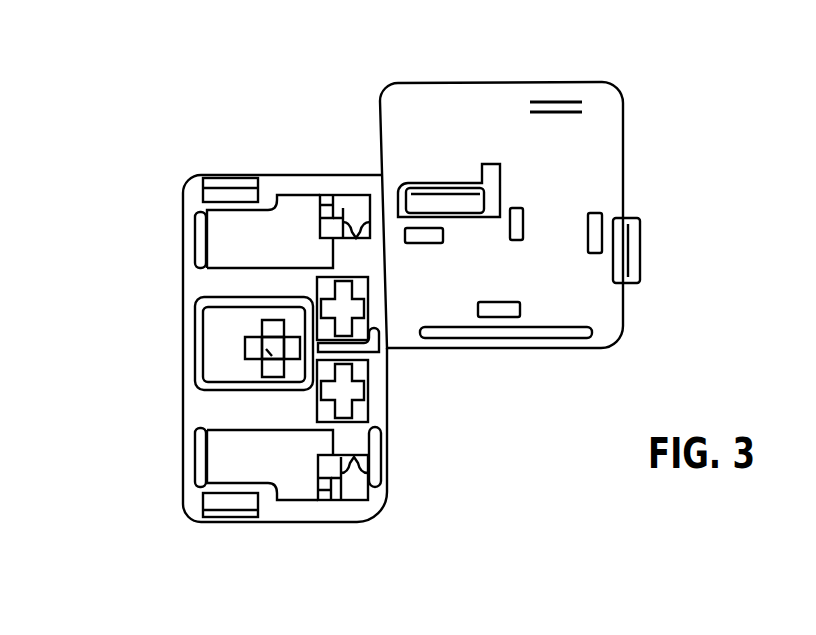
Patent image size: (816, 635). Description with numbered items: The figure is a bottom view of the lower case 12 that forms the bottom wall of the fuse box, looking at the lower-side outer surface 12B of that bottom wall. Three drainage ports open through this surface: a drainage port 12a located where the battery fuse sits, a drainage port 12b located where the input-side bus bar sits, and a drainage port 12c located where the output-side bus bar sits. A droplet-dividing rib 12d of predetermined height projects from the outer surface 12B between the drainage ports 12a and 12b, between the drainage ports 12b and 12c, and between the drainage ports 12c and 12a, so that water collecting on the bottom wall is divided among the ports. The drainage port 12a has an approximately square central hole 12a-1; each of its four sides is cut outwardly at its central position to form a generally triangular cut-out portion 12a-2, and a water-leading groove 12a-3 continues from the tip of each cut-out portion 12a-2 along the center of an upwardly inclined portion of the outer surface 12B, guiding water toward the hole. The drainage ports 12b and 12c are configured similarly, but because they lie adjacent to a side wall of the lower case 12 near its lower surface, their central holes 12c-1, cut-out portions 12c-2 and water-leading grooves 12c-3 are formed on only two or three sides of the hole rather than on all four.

The lower case 12 is at (218, 167).
The outer surface 12B is at (195, 195).
The drainage port 12a is at (169, 303).
The central hole 12a-1 is at (263, 330).
The cut-out portion 12a-2 is at (250, 341).
The water-leading groove 12a-3 is at (246, 350).
The drainage port 12b is at (352, 387).
The drainage port 12c is at (325, 324).
The terminal contact portion 12c-1 is at (355, 208).
The terminal portion 12c-2 is at (343, 203).
The water-leading groove 12c-3 is at (325, 196).
The droplet-dividing rib 12d is at (227, 390).